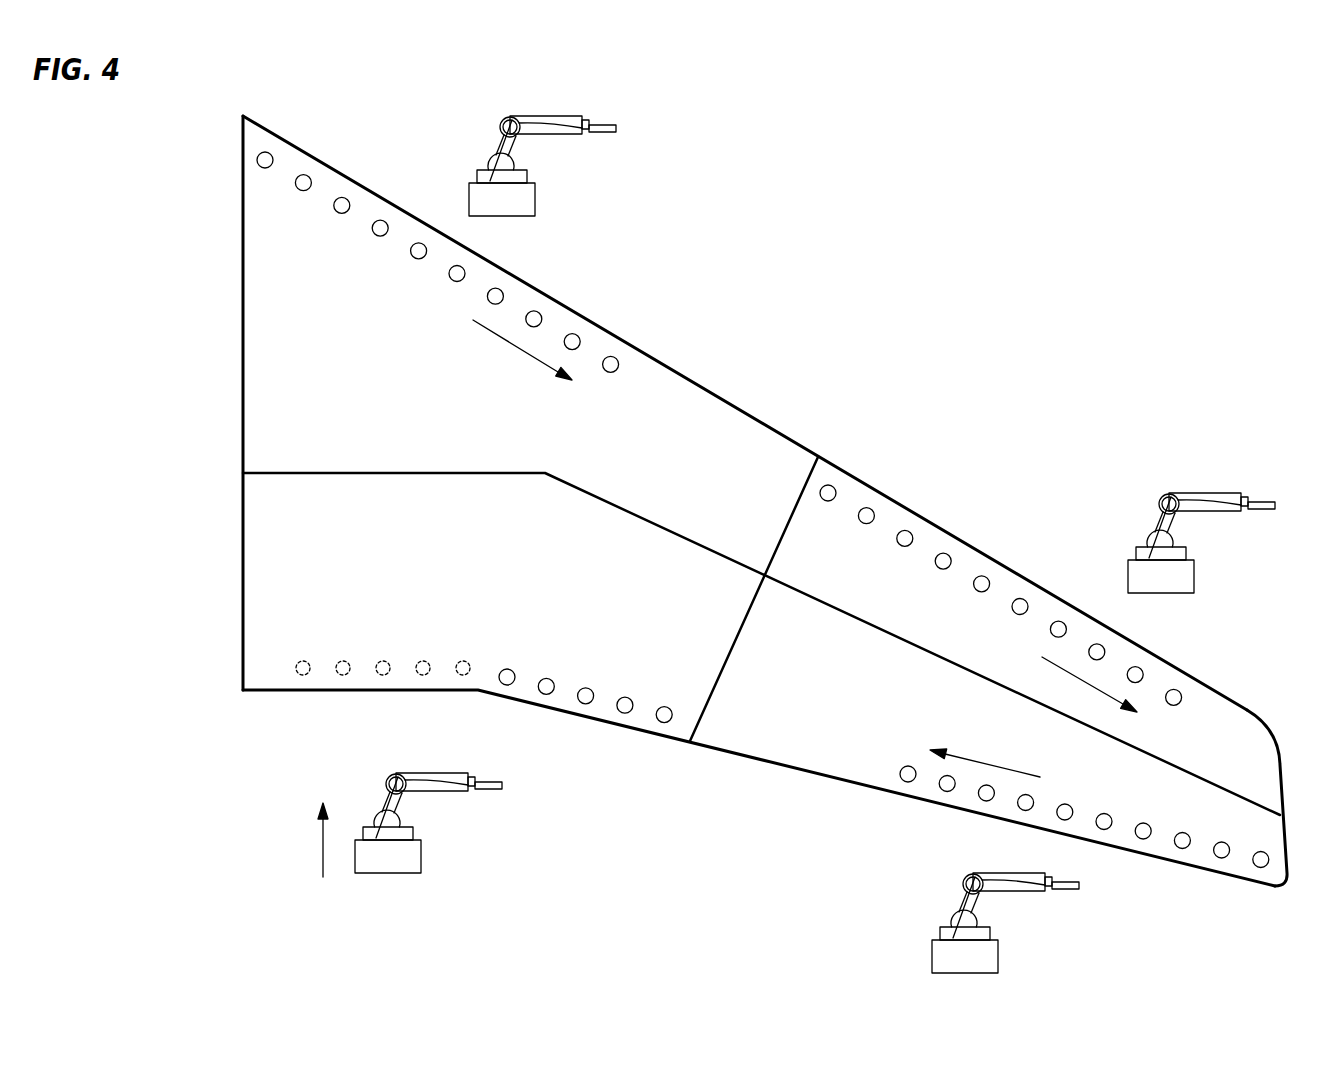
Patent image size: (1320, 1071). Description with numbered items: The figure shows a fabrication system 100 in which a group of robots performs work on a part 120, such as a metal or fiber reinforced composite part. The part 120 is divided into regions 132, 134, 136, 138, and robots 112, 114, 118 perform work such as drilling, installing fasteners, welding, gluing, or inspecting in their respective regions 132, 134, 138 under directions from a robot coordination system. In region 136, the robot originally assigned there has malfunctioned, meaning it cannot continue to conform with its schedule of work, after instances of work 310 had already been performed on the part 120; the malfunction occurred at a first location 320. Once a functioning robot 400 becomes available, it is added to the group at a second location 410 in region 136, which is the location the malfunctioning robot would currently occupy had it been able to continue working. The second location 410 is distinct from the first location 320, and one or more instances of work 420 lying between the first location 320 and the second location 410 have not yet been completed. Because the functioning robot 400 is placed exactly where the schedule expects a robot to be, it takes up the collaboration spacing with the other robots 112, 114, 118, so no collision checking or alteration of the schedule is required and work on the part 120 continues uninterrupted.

The fabrication system 100 is at (1130, 197).
The robot 112 is at (1212, 492).
The robot 114 is at (547, 114).
The robot 118 is at (997, 953).
The part 120 is at (1241, 903).
The region 132 is at (1238, 725).
The region 134 is at (750, 437).
The region 136 is at (258, 580).
The region 138 is at (867, 770).
The work 310 is at (416, 260).
The first location 320 is at (496, 659).
The functioning robot 400 is at (422, 856).
The second location 410 is at (285, 656).
The work 420 is at (337, 660).